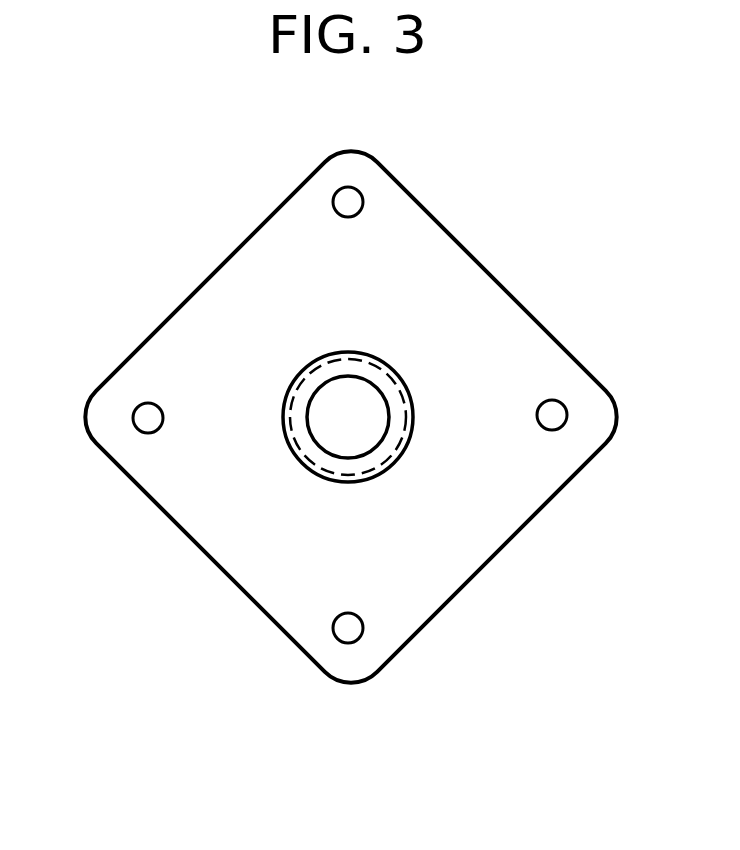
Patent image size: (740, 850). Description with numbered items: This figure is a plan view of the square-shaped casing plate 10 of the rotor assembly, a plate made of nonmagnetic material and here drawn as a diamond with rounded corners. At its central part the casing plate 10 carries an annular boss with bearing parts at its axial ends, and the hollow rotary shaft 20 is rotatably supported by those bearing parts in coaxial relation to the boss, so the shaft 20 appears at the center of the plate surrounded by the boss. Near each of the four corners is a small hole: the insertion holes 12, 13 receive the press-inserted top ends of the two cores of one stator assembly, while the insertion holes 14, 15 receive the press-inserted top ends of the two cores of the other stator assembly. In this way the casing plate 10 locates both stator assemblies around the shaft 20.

The casing plate 10 is at (470, 288).
The insertion hole 12 is at (136, 412).
The insertion hole 13 is at (336, 198).
The insertion hole 14 is at (337, 627).
The insertion hole 15 is at (541, 412).
The hollow rotary shaft 20 is at (392, 394).